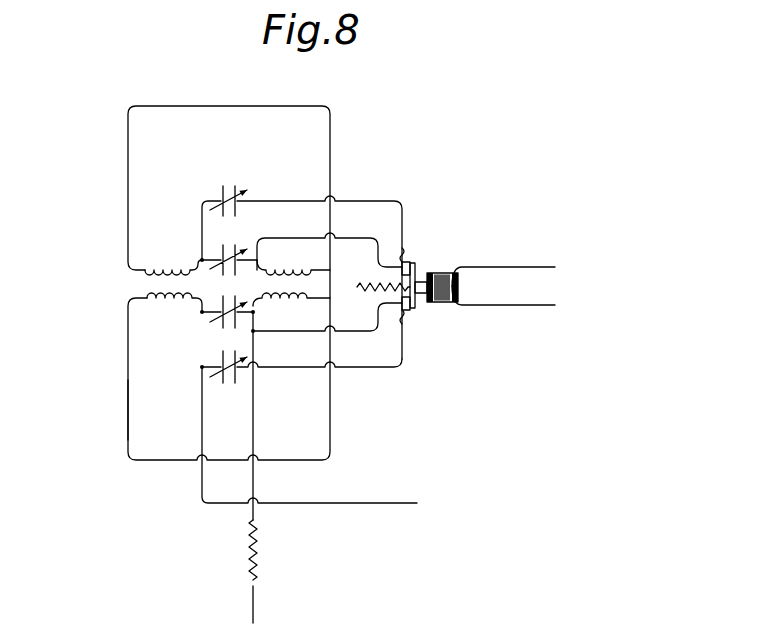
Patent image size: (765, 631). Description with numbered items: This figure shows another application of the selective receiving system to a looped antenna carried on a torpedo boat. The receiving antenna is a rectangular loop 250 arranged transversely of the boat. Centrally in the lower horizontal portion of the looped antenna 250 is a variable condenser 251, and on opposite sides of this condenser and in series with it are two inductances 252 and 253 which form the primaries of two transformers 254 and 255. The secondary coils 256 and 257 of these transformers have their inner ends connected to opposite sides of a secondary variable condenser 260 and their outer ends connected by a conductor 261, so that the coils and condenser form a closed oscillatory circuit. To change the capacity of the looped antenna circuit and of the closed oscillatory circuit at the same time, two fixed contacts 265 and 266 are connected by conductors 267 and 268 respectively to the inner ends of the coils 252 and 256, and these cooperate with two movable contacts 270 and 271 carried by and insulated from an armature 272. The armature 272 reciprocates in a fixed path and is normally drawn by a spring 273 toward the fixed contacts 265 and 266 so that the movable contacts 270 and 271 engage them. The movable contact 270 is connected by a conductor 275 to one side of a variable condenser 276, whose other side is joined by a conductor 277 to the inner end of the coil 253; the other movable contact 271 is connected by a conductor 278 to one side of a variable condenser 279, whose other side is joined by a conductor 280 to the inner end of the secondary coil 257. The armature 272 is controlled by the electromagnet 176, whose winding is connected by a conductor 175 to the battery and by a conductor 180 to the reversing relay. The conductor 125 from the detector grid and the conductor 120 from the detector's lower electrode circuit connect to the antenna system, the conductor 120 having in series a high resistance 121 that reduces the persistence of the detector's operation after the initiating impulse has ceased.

The looped antenna 250 is at (330, 140).
The variable condenser 276 is at (229, 184).
The conductor 277 is at (204, 212).
The variable condenser 251 is at (229, 246).
The inductance 253 is at (168, 268).
The inductance 252 is at (290, 269).
The transformer 255 is at (142, 281).
The transformer 254 is at (357, 287).
The secondary coil 257 is at (172, 299).
The secondary coil 256 is at (290, 299).
The secondary variable condenser 260 is at (222, 323).
The conductor 280 is at (212, 367).
The variable condenser 279 is at (228, 384).
The conductor 261 is at (128, 408).
The conductor 120 is at (253, 428).
The conductor 125 is at (202, 492).
The high resistance 121 is at (257, 552).
The conductor 275 is at (360, 200).
The conductor 278 is at (362, 368).
The conductor 267 is at (360, 234).
The conductor 268 is at (358, 334).
The fixed contact 265 is at (404, 262).
The fixed contact 266 is at (405, 312).
The movable contact 270 is at (410, 266).
The movable contact 271 is at (415, 306).
The armature 272 is at (417, 266).
The electromagnet 176 is at (458, 287).
The conductor 180 is at (530, 263).
The conductor 175 is at (528, 305).
The spring 273 is at (375, 292).